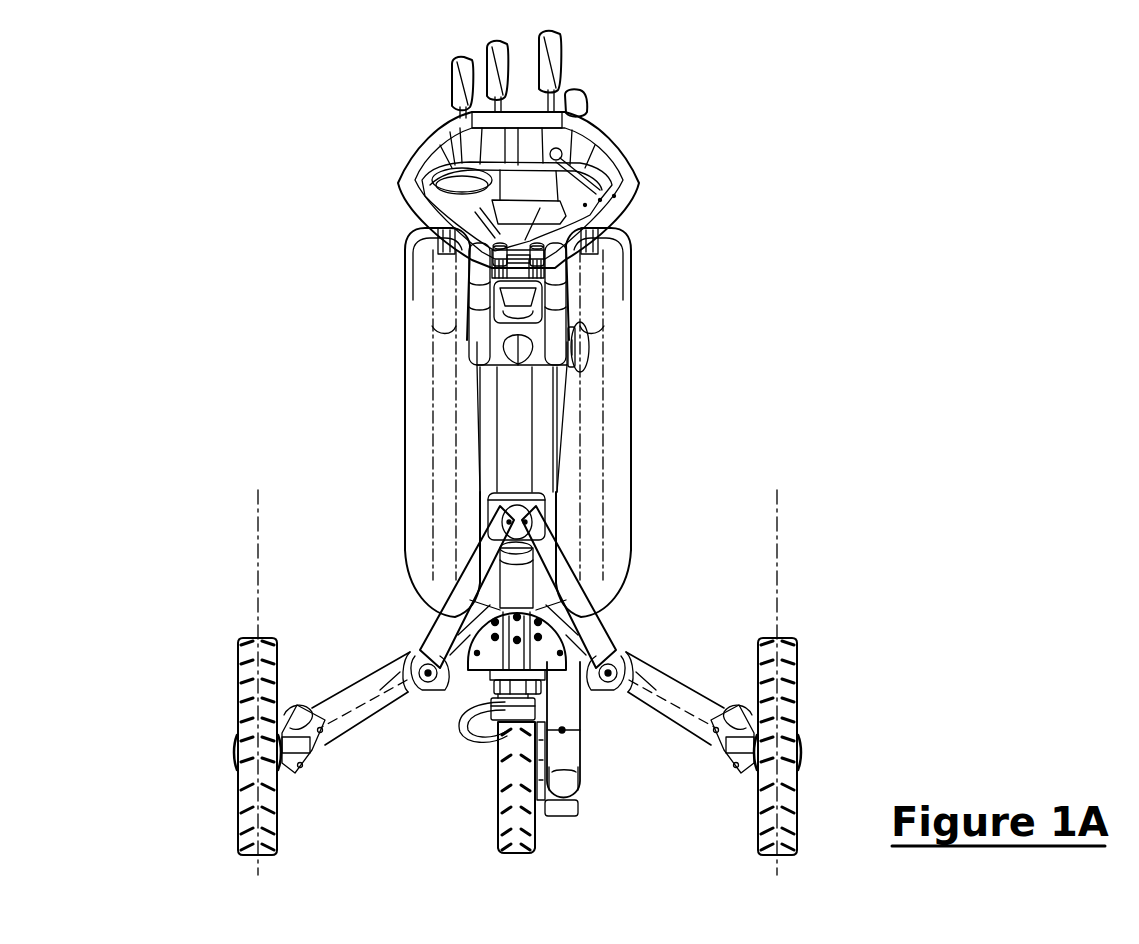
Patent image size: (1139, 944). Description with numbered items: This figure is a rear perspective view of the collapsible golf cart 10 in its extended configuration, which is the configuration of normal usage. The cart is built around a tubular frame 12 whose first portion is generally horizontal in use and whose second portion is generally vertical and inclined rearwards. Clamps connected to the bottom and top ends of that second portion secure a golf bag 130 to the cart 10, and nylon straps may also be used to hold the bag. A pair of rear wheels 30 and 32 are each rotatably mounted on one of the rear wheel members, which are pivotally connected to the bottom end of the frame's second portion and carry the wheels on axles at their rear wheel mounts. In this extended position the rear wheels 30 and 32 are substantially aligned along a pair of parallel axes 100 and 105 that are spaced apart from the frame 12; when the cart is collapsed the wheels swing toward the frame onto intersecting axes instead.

The collapsible golf cart 10 is at (265, 194).
The frame 12 is at (522, 417).
The rear wheel 30 is at (245, 667).
The rear wheel 32 is at (790, 666).
The parallel axis 100 is at (256, 661).
The parallel axis 105 is at (786, 661).
The golf bag 130 is at (560, 56).